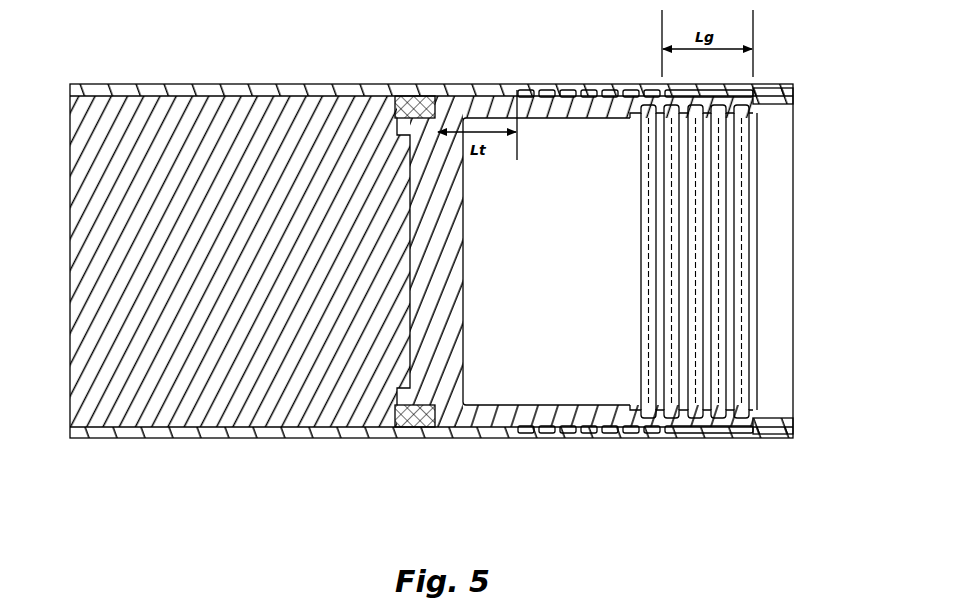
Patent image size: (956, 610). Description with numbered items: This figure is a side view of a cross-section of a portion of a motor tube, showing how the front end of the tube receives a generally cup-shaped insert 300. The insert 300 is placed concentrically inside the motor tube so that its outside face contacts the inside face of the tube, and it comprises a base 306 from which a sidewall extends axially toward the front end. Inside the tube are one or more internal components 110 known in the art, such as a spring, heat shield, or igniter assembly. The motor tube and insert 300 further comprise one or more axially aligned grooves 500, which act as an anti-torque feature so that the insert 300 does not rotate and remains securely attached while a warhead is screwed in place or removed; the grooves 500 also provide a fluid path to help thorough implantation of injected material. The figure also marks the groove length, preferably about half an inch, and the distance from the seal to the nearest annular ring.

The internal component 110 is at (242, 110).
The insert 300 is at (793, 98).
The base 306 is at (442, 288).
The axially aligned groove 500 is at (733, 106).